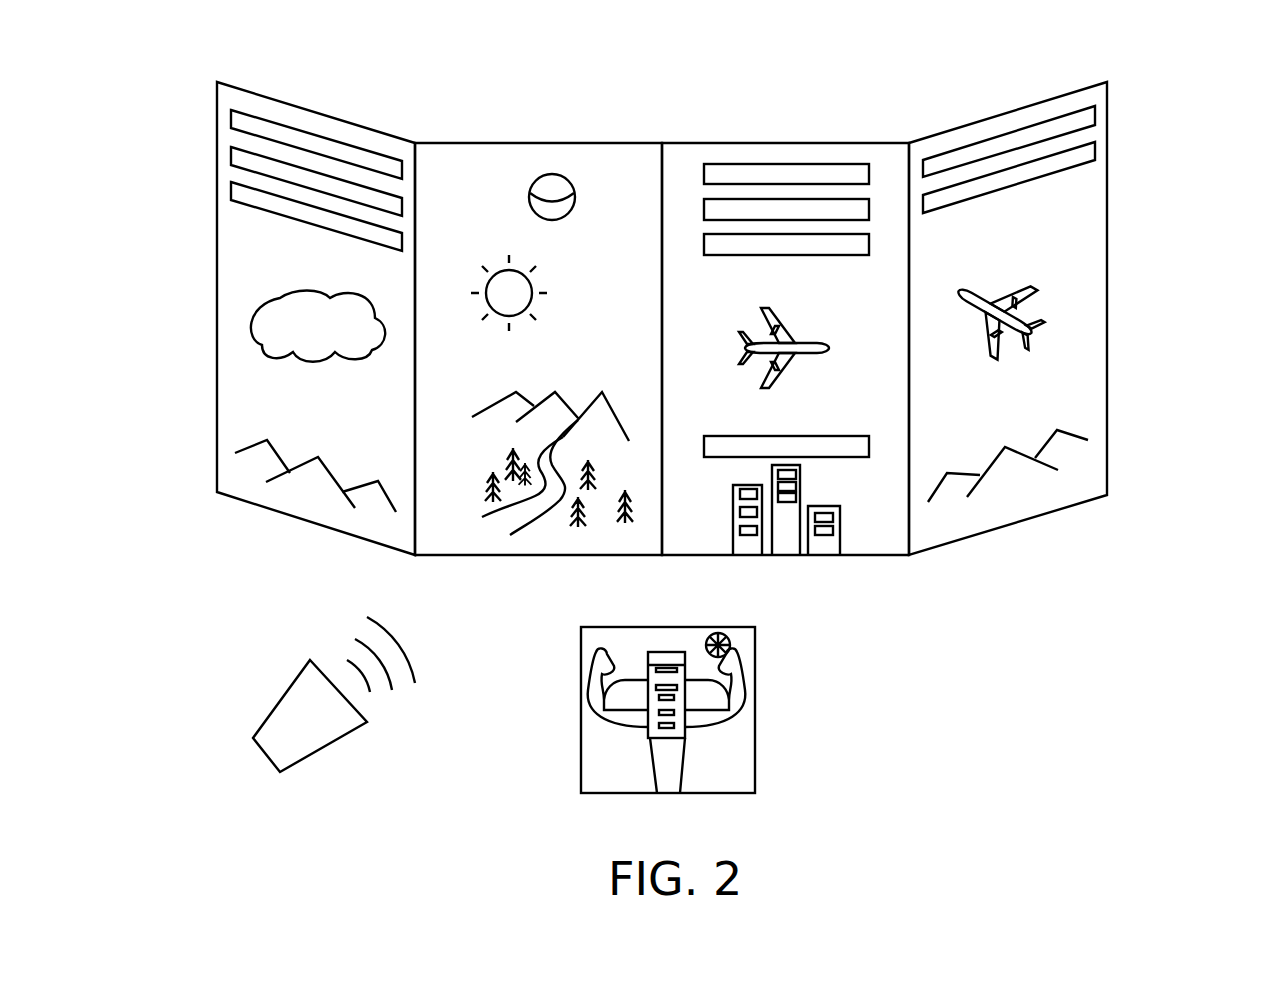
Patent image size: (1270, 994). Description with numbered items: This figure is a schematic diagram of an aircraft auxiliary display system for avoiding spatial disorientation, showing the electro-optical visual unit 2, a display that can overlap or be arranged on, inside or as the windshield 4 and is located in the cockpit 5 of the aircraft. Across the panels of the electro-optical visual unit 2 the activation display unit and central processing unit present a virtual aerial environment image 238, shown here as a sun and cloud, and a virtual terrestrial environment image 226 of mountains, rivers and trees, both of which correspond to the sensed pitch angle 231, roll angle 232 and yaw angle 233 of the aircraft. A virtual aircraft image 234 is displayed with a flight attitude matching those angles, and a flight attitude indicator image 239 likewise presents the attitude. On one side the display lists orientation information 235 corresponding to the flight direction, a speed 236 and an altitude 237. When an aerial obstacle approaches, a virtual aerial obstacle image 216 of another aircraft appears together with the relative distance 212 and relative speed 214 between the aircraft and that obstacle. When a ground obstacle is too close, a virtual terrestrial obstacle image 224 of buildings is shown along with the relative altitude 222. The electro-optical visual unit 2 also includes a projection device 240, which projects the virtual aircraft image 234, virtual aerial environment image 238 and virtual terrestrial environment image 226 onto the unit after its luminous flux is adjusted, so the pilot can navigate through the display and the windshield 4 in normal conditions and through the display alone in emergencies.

The electro-optical visual unit 2 is at (1107, 240).
The windshield 4 is at (1118, 300).
The cockpit 5 is at (540, 705).
The relative distance 212 is at (1092, 113).
The relative speed 214 is at (1092, 150).
The virtual aerial obstacle image 216 is at (997, 318).
The relative altitude 222 is at (720, 450).
The virtual terrestrial obstacle image 224 is at (785, 532).
The virtual terrestrial environment image 226 is at (315, 480).
The pitch angle 231 is at (728, 170).
The roll angle 232 is at (754, 210).
The yaw angle 233 is at (789, 243).
The virtual aircraft image 234 is at (788, 347).
The orientation information 235 is at (238, 122).
The speed 236 is at (238, 158).
The altitude 237 is at (238, 192).
The virtual aerial environment image 238 is at (270, 329).
The flight attitude indicator image 239 is at (552, 175).
The projection device 240 is at (297, 707).